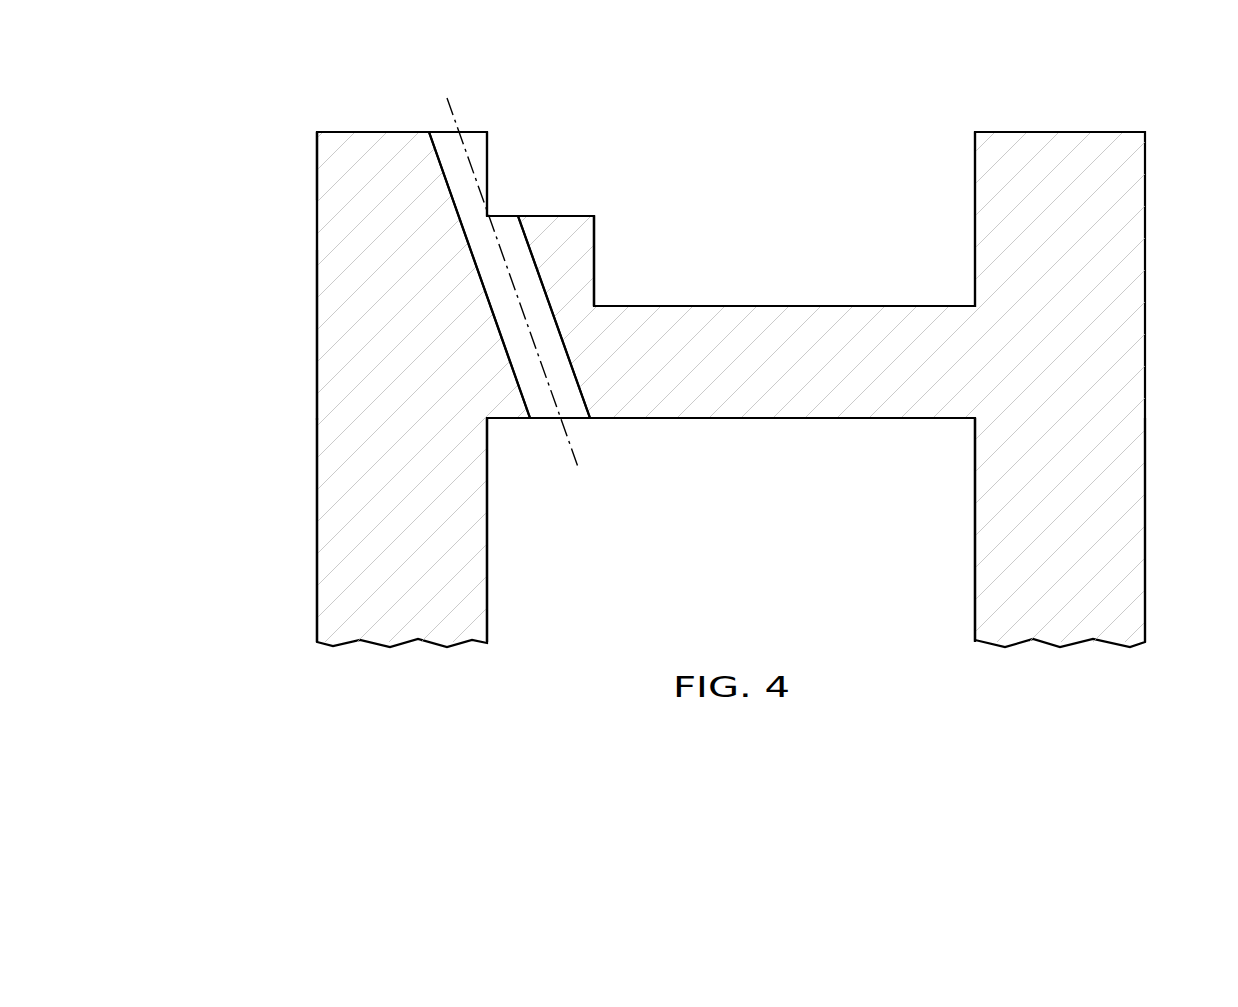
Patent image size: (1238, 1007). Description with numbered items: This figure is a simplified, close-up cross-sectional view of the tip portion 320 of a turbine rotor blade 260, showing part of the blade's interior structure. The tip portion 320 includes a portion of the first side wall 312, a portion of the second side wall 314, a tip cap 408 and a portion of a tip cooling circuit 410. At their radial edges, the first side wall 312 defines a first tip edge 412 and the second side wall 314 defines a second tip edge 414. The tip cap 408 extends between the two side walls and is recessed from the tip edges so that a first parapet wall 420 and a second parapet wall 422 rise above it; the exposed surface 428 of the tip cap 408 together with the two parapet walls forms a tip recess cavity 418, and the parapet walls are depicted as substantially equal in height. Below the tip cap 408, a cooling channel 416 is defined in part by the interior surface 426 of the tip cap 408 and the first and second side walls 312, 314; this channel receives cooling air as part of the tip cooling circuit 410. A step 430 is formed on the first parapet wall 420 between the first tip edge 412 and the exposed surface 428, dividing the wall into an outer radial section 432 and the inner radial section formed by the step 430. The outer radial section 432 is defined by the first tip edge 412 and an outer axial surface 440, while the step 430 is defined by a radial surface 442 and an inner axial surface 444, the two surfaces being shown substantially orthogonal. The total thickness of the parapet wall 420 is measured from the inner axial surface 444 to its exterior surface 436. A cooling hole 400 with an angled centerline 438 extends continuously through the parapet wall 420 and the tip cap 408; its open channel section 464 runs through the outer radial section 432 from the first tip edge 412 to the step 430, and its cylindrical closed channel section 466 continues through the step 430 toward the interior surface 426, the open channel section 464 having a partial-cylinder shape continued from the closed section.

The turbine rotor blade 260 is at (221, 348).
The tip portion 320 is at (274, 108).
The first side wall 312 is at (345, 508).
The second side wall 314 is at (1107, 482).
The cooling hole 400 is at (486, 253).
The tip cap 408 is at (765, 333).
The tip cooling circuit 410 is at (398, 245).
The first tip edge 412 is at (343, 131).
The second tip edge 414 is at (1012, 132).
The cooling channel 416 is at (737, 571).
The tip recess cavity 418 is at (808, 200).
The first parapet wall 420 is at (402, 140).
The second parapet wall 422 is at (1077, 162).
The interior surface 426 is at (798, 420).
The exposed surface 428 is at (873, 305).
The step 430 is at (568, 230).
The outer radial section 432 is at (332, 153).
The exterior surface 436 is at (317, 320).
The centerline 438 is at (545, 362).
The outer axial surface 440 is at (487, 142).
The radial surface 442 is at (580, 215).
The inner axial surface 444 is at (595, 270).
The open channel section 464 is at (468, 176).
The closed channel section 466 is at (508, 330).